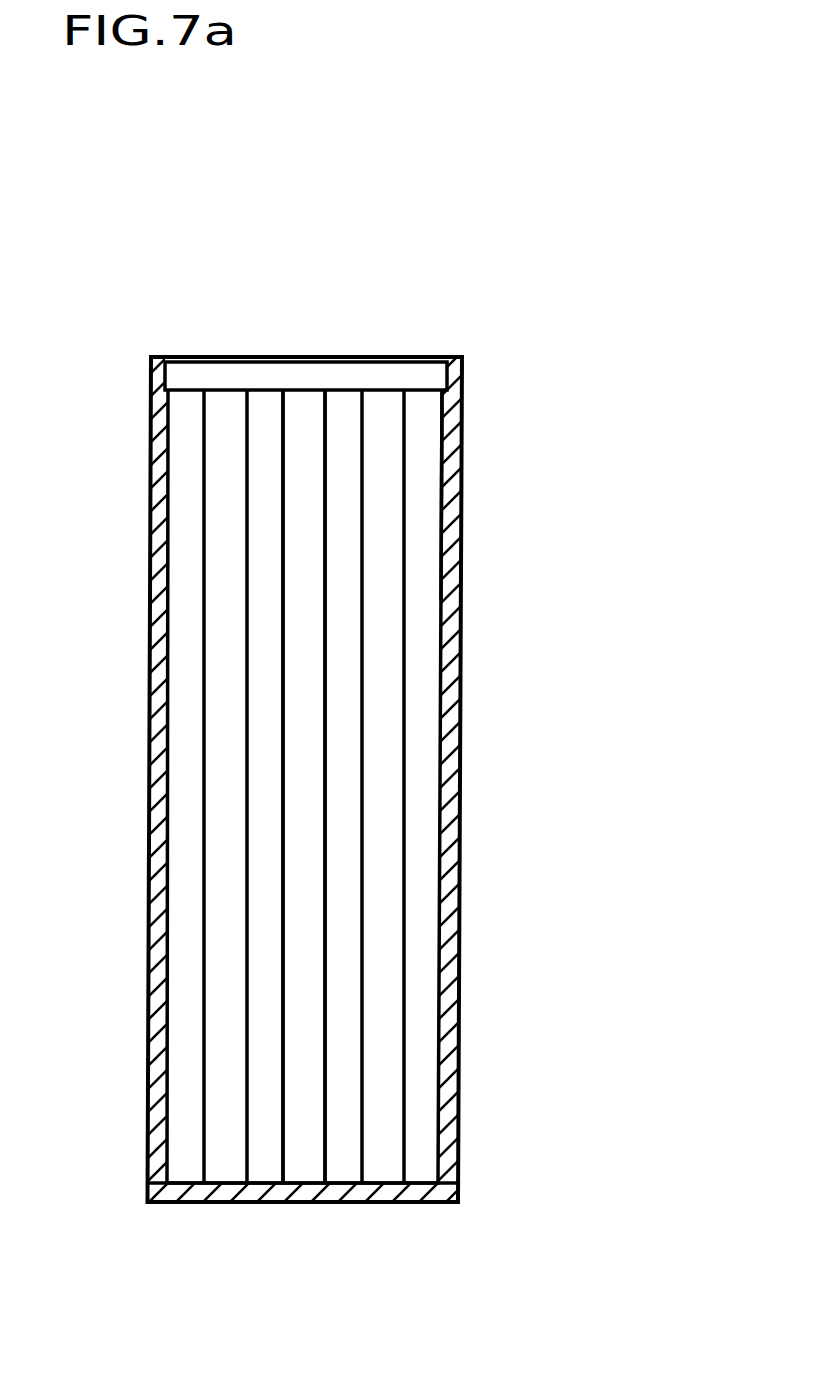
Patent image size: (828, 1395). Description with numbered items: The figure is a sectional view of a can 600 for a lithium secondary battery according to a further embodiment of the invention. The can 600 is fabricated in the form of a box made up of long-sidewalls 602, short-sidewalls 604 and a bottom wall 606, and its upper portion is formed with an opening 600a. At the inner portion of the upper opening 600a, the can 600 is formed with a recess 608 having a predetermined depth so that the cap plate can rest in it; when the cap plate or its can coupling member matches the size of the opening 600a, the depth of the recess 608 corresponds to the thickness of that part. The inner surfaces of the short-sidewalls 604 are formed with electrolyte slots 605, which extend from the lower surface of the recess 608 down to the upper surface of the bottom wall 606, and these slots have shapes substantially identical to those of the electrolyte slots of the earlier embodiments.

The can 600 is at (556, 248).
The opening 600a is at (440, 427).
The long-sidewalls 602 is at (447, 592).
The short-sidewalls 604 is at (422, 866).
The electrolyte slots 605 is at (308, 410).
The bottom wall 606 is at (312, 1203).
The recess 608 is at (167, 374).